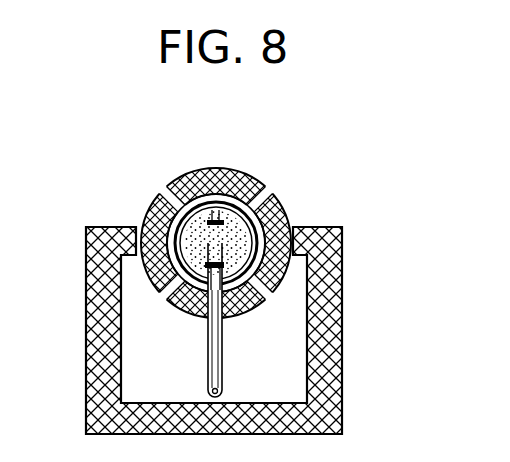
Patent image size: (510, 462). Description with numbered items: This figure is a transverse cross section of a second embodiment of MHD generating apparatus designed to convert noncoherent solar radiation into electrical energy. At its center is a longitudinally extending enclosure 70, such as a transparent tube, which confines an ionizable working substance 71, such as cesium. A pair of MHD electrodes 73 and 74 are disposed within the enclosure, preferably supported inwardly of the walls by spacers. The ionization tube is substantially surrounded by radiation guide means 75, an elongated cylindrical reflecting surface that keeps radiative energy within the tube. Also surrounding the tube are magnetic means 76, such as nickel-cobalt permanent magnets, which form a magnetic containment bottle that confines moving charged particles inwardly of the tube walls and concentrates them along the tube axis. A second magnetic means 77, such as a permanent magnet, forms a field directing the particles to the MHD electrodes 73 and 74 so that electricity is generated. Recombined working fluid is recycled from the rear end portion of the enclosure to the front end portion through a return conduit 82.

The longitudinally extending enclosure 70 is at (239, 205).
The ionizable working substance 71 is at (258, 224).
The MHD electrode 73 is at (205, 217).
The MHD electrode 74 is at (190, 287).
The radiation guide means 75 is at (180, 207).
The magnetic means 76 is at (231, 170).
The second magnetic means 77 is at (330, 342).
The return conduit 82 is at (222, 368).